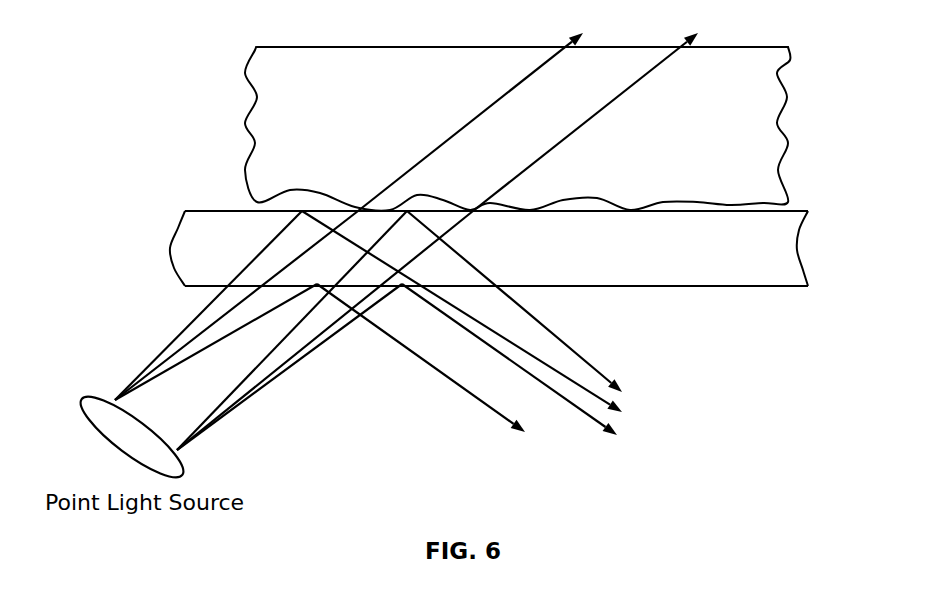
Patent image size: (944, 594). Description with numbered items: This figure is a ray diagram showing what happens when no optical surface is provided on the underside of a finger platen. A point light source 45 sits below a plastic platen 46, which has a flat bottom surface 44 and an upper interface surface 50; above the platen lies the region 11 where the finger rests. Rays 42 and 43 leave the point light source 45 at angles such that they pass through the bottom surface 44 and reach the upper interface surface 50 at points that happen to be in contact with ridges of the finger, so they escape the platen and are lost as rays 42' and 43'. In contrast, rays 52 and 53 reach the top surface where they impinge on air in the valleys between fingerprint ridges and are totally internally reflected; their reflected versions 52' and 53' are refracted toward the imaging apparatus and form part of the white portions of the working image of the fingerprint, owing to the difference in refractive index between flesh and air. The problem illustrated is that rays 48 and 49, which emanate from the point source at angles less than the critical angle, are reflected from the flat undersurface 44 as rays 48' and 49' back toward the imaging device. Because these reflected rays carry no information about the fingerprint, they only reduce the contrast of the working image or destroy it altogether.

The transparent platen 11 is at (771, 157).
The ray 42 is at (236, 305).
The lost ray 42' is at (470, 122).
The ray 43 is at (325, 330).
The lost ray 43' is at (585, 122).
The bottom surface 44 is at (726, 290).
The point light source 45 is at (102, 432).
The plastic platen 46 is at (787, 259).
The ray 48 is at (214, 342).
The reflected ray 48' is at (421, 358).
The ray 49 is at (289, 367).
The reflected ray 49' is at (509, 359).
The upper interface surface 50 is at (803, 208).
The ray 52 is at (287, 330).
The reflected ray 52' is at (515, 301).
The ray 53 is at (208, 305).
The reflected ray 53' is at (462, 311).